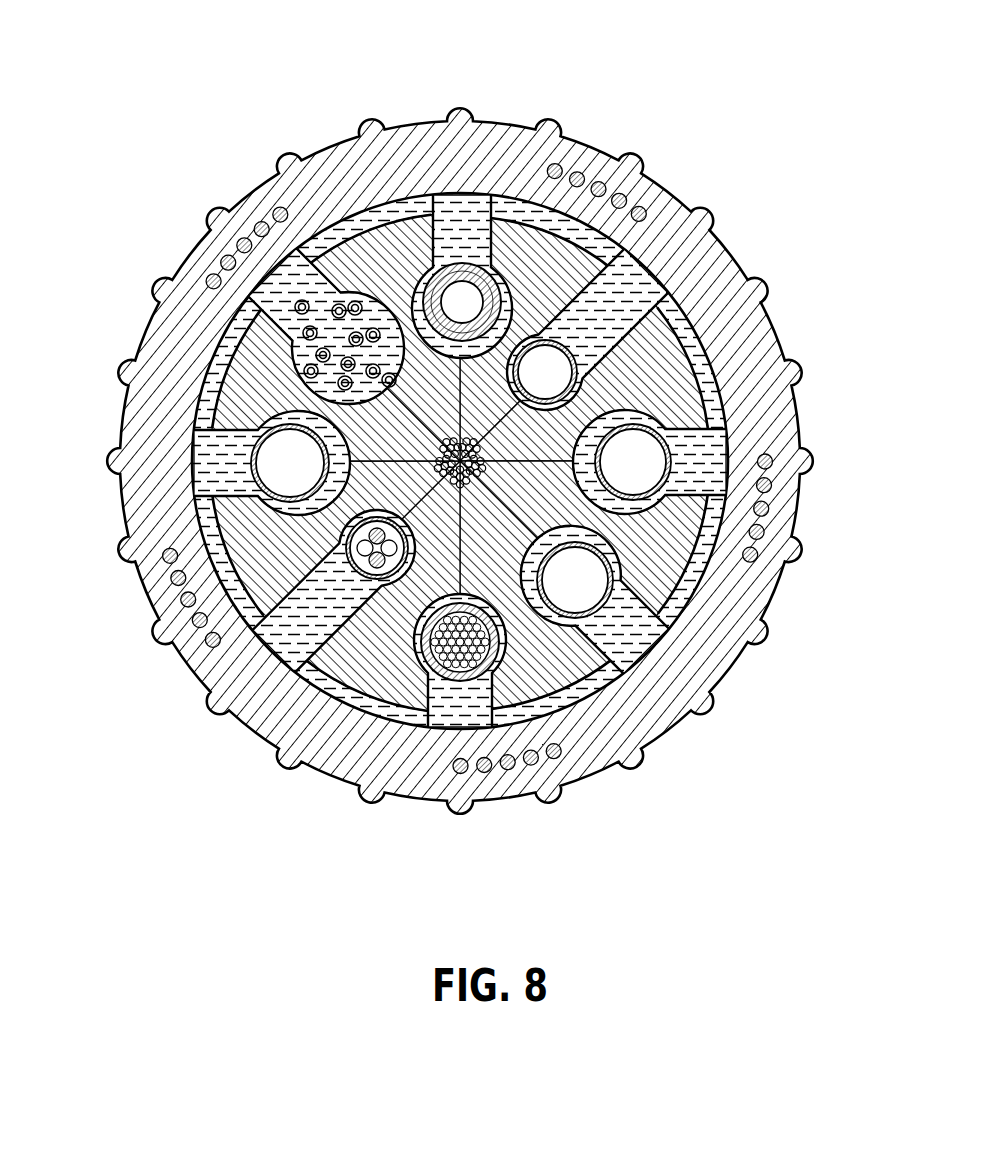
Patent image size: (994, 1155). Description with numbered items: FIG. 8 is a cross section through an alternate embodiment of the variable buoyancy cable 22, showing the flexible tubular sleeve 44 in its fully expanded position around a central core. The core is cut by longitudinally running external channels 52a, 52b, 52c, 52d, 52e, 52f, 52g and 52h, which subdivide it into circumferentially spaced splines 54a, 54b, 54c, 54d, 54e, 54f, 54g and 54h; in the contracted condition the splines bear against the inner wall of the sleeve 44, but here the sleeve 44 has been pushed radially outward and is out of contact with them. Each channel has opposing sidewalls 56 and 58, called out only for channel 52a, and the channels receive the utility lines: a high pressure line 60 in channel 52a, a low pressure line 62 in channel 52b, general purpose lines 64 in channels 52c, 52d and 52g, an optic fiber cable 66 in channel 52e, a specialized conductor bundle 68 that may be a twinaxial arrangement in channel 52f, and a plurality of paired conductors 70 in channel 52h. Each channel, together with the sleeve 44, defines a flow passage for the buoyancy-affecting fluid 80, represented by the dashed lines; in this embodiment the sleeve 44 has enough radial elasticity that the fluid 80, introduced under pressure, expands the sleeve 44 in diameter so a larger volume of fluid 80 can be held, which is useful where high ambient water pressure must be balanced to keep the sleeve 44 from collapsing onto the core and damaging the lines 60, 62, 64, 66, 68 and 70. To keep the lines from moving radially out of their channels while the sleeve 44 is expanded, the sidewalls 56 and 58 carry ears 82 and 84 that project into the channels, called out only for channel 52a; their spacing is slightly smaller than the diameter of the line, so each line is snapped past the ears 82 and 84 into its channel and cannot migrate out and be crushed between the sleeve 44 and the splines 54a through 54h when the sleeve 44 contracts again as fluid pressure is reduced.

The variable buoyancy cable 22 is at (178, 192).
The flexible tubular sleeve 44 is at (247, 197).
The channel 52a is at (461, 179).
The channel 52b is at (582, 340).
The channel 52c is at (667, 487).
The channel 52d is at (593, 627).
The channel 52e is at (433, 680).
The channel 52f is at (318, 620).
The channel 52g is at (262, 470).
The channel 52h is at (228, 310).
The spline 54a is at (367, 233).
The spline 54b is at (537, 227).
The spline 54c is at (655, 378).
The spline 54d is at (640, 540).
The spline 54e is at (540, 657).
The spline 54f is at (380, 657).
The spline 54g is at (250, 543).
The spline 54h is at (247, 365).
The sidewall 56 is at (438, 248).
The sidewall 58 is at (487, 253).
The high pressure line 60 is at (462, 265).
The low pressure line 62 is at (578, 318).
The general purpose lines 64 is at (255, 445).
The optic fiber cable 66 is at (484, 690).
The specialized conductor bundle 68 is at (253, 605).
The paired conductors 70 is at (300, 312).
The fluid 80 is at (622, 282).
The ear 82 is at (423, 200).
The ear 84 is at (535, 277).